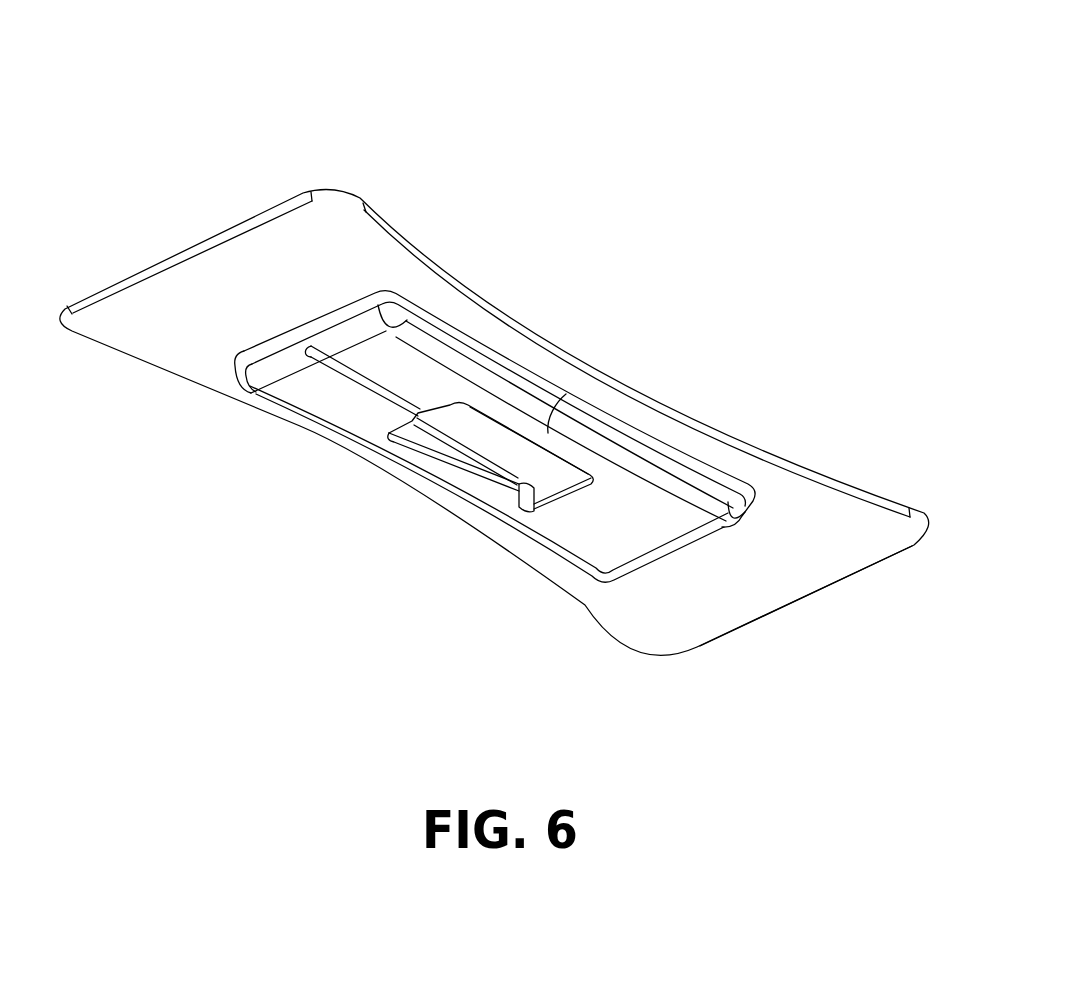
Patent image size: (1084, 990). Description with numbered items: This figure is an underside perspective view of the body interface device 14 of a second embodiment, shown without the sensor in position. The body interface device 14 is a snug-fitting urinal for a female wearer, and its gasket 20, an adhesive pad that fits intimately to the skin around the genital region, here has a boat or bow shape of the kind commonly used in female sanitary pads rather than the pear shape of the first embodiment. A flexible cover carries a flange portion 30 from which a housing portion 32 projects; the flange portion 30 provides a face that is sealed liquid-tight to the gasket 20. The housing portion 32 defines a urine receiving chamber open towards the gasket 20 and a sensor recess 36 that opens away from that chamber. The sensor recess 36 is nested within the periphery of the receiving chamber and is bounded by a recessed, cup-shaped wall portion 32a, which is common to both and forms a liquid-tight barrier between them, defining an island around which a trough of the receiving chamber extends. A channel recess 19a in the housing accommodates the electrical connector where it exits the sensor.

The body interface device 14 is at (494, 378).
The channel recess 19a is at (337, 365).
The gasket 20 is at (763, 447).
The flange portion 30 is at (863, 507).
The housing portion 32 is at (610, 567).
The wall portion 32a is at (497, 447).
The sensor recess 36 is at (454, 452).